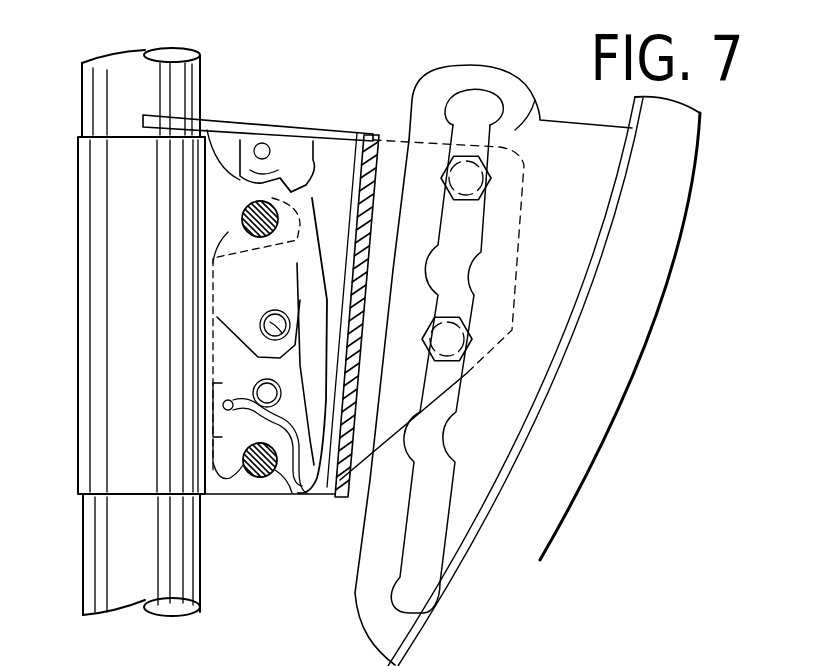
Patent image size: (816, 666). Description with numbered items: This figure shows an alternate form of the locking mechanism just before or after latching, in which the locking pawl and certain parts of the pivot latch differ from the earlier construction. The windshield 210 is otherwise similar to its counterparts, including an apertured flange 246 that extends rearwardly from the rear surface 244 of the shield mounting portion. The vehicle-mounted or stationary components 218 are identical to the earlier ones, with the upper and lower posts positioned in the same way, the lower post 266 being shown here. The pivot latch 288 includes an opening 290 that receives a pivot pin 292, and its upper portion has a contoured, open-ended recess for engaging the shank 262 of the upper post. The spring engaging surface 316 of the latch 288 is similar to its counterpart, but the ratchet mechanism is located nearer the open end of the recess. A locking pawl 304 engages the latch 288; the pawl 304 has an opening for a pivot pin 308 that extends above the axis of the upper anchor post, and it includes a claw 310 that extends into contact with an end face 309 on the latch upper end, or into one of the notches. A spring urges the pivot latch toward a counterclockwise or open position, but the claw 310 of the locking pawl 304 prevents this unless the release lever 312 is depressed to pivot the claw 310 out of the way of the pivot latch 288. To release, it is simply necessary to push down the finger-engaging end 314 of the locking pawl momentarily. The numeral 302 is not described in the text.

The windshield 210 is at (673, 297).
The vehicle-mounted or stationary components 218 is at (260, 527).
The rear surface 244 is at (606, 222).
The apertured flange 246 is at (538, 100).
The shank 262 is at (253, 216).
The lower post 266 is at (247, 475).
The pivot latch 288 is at (260, 272).
The opening 290 is at (272, 326).
The pivot pin 292 is at (325, 497).
The seat rail member 302 is at (600, 660).
The locking pawl 304 is at (313, 150).
The pivot pin 308 is at (266, 143).
The end face 309 is at (250, 190).
The claw 310 is at (340, 142).
The release lever 312 is at (233, 127).
The finger-engaging end 314 is at (160, 115).
The spring engaging surface 316 is at (315, 178).